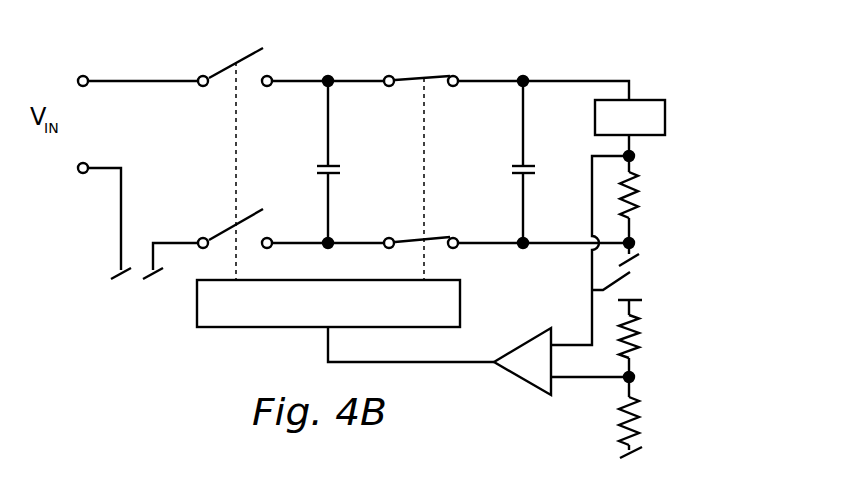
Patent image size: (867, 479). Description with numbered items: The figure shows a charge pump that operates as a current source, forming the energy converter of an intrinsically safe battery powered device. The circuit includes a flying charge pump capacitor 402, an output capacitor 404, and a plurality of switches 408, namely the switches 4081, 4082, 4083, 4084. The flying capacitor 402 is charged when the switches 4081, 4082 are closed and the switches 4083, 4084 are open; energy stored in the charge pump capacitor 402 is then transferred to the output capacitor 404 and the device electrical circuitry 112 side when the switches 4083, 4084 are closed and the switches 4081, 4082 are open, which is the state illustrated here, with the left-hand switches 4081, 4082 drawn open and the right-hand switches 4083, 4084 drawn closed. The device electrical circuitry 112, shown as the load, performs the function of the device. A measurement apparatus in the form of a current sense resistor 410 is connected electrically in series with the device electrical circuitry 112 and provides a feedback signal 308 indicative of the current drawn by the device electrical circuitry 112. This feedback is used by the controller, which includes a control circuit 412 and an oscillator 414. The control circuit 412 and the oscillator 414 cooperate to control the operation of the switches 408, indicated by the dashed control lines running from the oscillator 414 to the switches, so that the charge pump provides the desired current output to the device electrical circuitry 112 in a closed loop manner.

The switches 408 is at (307, 126).
The first switch 4081 is at (230, 65).
The second switch 4082 is at (230, 227).
The third switch 4083 is at (410, 77).
The fourth switch 4084 is at (407, 238).
The flying charge pump capacitor 402 is at (338, 170).
The output capacitor 404 is at (512, 170).
The device electrical circuitry 112 is at (665, 117).
The current sense resistor 410 is at (640, 204).
The feedback signal 308 is at (630, 272).
The control circuit 412 is at (519, 342).
The oscillator 414 is at (197, 303).